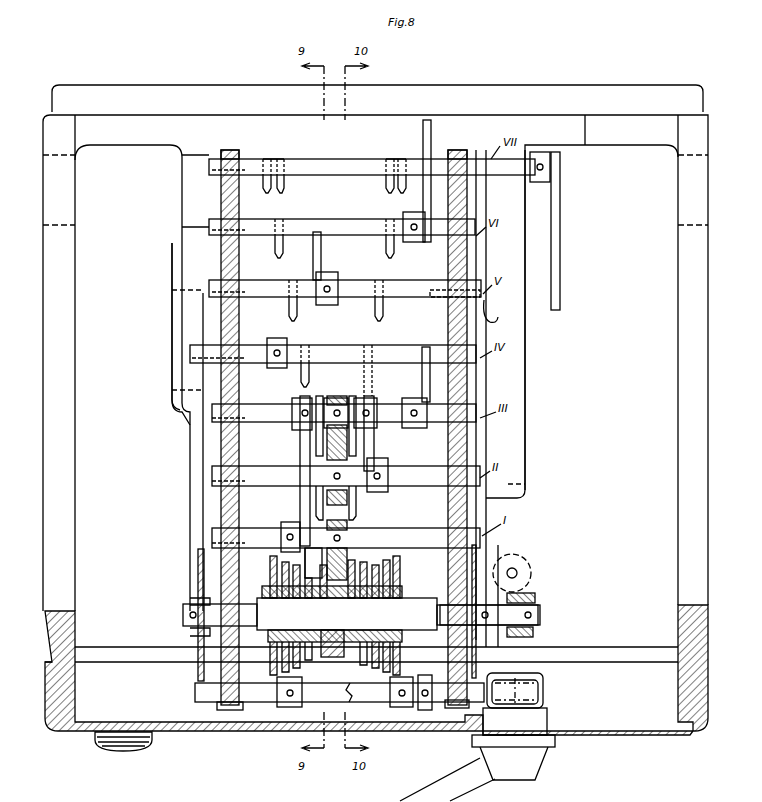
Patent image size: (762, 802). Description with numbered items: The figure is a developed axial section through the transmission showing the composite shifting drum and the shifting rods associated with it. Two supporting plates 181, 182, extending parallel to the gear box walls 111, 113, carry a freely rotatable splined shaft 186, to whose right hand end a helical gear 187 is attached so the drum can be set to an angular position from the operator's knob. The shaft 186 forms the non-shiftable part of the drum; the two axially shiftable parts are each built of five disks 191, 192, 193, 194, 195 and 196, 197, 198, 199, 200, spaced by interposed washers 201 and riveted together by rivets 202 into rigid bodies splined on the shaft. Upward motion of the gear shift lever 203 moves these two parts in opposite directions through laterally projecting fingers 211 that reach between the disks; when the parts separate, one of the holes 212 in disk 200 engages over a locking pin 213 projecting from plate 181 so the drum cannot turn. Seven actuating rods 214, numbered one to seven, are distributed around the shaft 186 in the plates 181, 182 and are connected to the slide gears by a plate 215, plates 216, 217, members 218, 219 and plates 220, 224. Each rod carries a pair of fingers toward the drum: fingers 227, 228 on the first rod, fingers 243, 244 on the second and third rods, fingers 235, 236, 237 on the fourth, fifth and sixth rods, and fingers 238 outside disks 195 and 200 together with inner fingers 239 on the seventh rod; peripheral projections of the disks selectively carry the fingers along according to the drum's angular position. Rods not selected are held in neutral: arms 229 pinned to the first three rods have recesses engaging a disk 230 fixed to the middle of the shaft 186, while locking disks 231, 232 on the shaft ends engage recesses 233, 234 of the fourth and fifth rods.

The wall 111 is at (188, 183).
The wall 113 is at (518, 225).
The supporting plate 181 is at (240, 395).
The supporting plate 182 is at (478, 385).
The splined shaft 186 is at (361, 607).
The helical gear 187 is at (530, 598).
The disk 191 is at (352, 572).
The disk 192 is at (372, 594).
The disk 193 is at (388, 589).
The disk 194 is at (398, 568).
The disk 195 is at (390, 580).
The disk 196 is at (340, 589).
The disk 197 is at (319, 601).
The disk 198 is at (302, 589).
The disk 199 is at (275, 588).
The disk 200 is at (281, 552).
The washer 201 is at (268, 592).
The rivet 202 is at (400, 637).
The gear shift lever 203 is at (426, 793).
The finger 211 is at (277, 688).
The hole 212 is at (270, 570).
The locking pin 213 is at (198, 594).
The actuating rod 214 is at (366, 159).
The plate 215 is at (300, 440).
The rod 216 is at (374, 452).
The plate 217 is at (422, 378).
The member 218 is at (268, 340).
The member 219 is at (321, 265).
The plate 220 is at (424, 212).
The plate 224 is at (560, 282).
The finger 227 is at (305, 560).
The finger 228 is at (322, 562).
The arm 229 is at (350, 540).
The disk 230 is at (336, 657).
The locking disk 231 is at (480, 568).
The locking disk 232 is at (198, 570).
The recess 233 is at (197, 365).
The recess 234 is at (492, 322).
The finger 235 is at (310, 380).
The finger 236 is at (374, 316).
The finger 237 is at (278, 258).
The finger 238 is at (270, 193).
The finger 239 is at (384, 182).
The finger 243 is at (336, 503).
The finger 244 is at (336, 426).